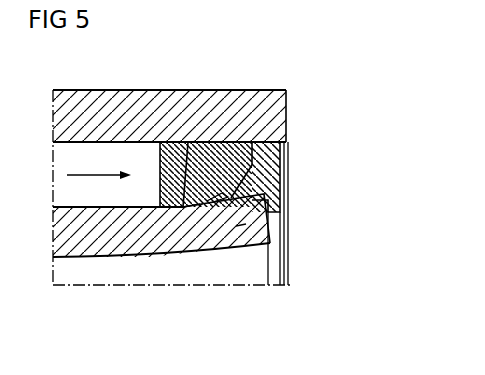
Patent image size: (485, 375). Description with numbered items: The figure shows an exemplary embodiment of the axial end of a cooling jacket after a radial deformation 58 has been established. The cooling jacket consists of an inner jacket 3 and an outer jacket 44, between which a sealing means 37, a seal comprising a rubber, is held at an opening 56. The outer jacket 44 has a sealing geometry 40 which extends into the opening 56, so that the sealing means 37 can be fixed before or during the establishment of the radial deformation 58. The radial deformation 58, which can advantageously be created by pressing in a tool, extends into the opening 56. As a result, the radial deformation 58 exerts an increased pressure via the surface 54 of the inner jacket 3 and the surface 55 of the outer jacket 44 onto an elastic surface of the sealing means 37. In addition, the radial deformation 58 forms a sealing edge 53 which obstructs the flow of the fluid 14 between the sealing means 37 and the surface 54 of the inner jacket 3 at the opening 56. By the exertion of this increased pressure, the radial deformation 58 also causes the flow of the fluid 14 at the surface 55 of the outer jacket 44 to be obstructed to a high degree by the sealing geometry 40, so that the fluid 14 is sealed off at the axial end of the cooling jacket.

The inner jacket 3 is at (82, 237).
The fluid 14 is at (94, 174).
The sealing means 37 is at (262, 174).
The sealing geometry 40 is at (247, 147).
The outer jacket 44 is at (160, 100).
The sealing edge 53 is at (254, 150).
The surface of the inner jacket 54 is at (213, 204).
The surface of the outer jacket 55 is at (184, 208).
The opening 56 is at (302, 188).
The radial deformation 58 is at (243, 224).